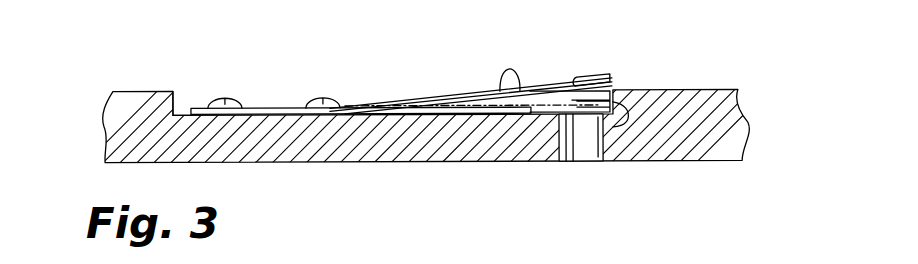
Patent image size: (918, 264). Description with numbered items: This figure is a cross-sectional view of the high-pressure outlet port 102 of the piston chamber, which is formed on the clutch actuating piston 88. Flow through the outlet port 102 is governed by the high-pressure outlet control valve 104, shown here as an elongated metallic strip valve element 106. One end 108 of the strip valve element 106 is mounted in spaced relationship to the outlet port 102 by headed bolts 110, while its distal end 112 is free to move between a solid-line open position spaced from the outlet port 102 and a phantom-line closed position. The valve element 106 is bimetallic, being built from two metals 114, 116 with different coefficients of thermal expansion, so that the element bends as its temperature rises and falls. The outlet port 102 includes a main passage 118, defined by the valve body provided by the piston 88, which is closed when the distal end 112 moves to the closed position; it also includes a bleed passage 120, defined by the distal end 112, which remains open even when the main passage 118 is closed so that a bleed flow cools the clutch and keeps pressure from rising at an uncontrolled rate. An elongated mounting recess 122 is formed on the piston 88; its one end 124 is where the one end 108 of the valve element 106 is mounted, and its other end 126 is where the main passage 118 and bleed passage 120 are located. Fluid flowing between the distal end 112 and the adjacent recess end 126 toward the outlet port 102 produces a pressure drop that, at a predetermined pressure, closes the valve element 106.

The clutch actuating piston 88 is at (703, 152).
The high-pressure outlet port 102 is at (582, 198).
The high-pressure outlet control valve 104 is at (487, 86).
The elongated metallic strip valve element 106 is at (405, 103).
The one end of the valve element 108 is at (268, 108).
The headed bolts 110 is at (219, 97).
The distal end of the valve element 112 is at (565, 88).
The first metal 114 is at (520, 92).
The second metal 116 is at (538, 115).
The main passage 118 is at (592, 129).
The bleed passage 120 is at (612, 80).
The elongated mounting recess 122 is at (188, 92).
The one end of the mounting recess 124 is at (290, 115).
The other end of the mounting recess 126 is at (621, 107).